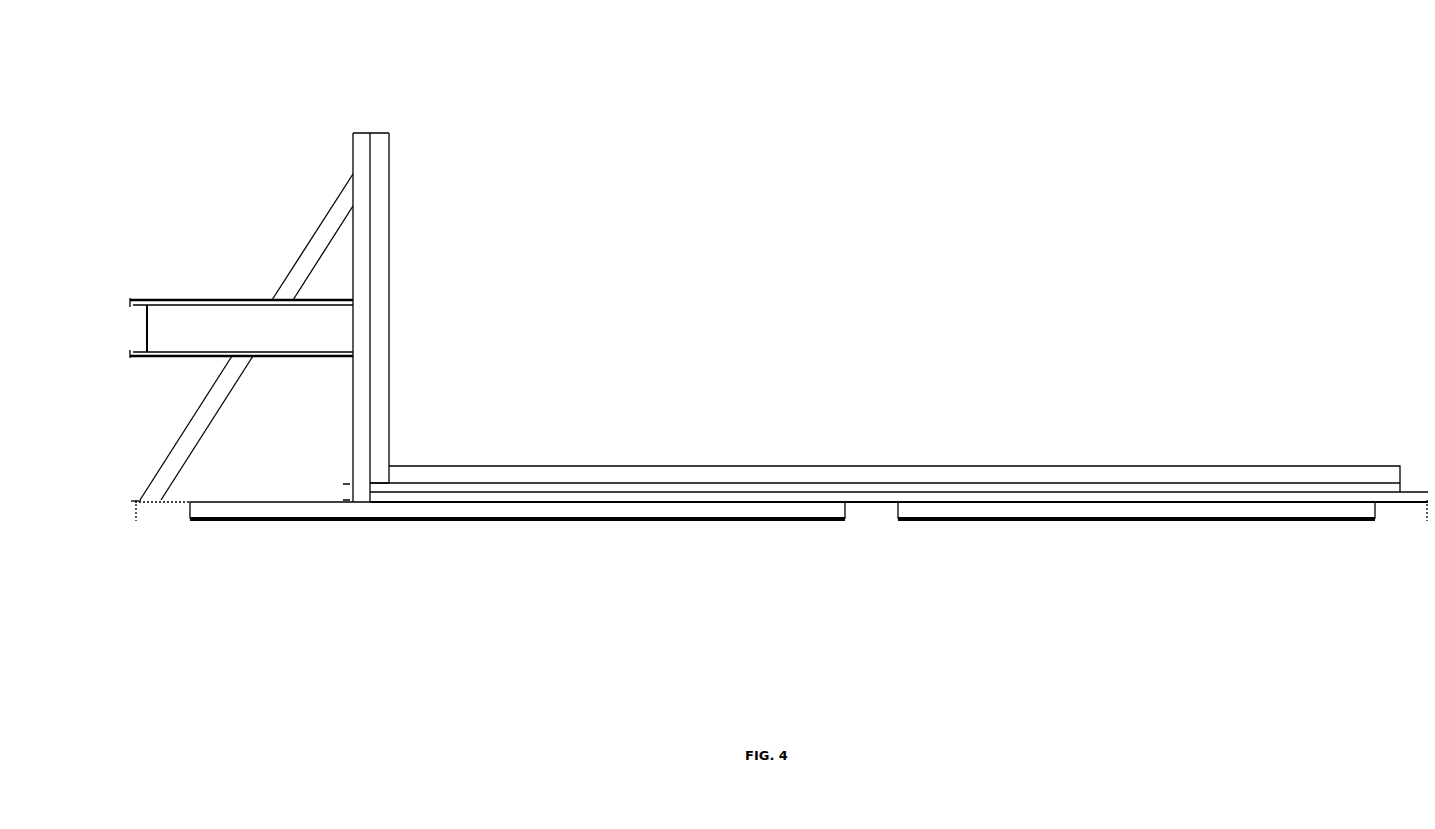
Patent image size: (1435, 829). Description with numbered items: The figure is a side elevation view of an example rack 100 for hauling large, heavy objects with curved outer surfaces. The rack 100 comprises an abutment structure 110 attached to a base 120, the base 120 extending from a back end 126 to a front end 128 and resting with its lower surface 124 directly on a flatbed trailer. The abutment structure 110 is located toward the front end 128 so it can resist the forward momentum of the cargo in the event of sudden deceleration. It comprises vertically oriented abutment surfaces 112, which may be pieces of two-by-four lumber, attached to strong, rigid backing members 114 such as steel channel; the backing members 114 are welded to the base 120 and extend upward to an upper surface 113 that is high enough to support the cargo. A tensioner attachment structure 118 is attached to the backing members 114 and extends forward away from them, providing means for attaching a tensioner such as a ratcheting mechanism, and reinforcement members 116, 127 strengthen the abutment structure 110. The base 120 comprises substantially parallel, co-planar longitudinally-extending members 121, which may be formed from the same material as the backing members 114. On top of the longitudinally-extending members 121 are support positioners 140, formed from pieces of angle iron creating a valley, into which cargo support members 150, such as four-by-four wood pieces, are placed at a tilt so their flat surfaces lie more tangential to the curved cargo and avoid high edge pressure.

The rack 100 is at (928, 138).
The abutment structure 110 is at (375, 108).
The abutment surface 112 is at (382, 213).
The upper surface 113 is at (377, 130).
The backing member 114 is at (362, 162).
The reinforcement member 116 is at (318, 244).
The tensioner attachment structure 118 is at (228, 325).
The base 120 is at (1430, 565).
The longitudinally-extending member 121 is at (322, 510).
The lower surface 124 is at (697, 519).
The back end 126 is at (1425, 525).
The reinforcement member 127 is at (348, 483).
The front end 128 is at (125, 515).
The support positioner 140 is at (1410, 496).
The cargo support member 150 is at (722, 468).